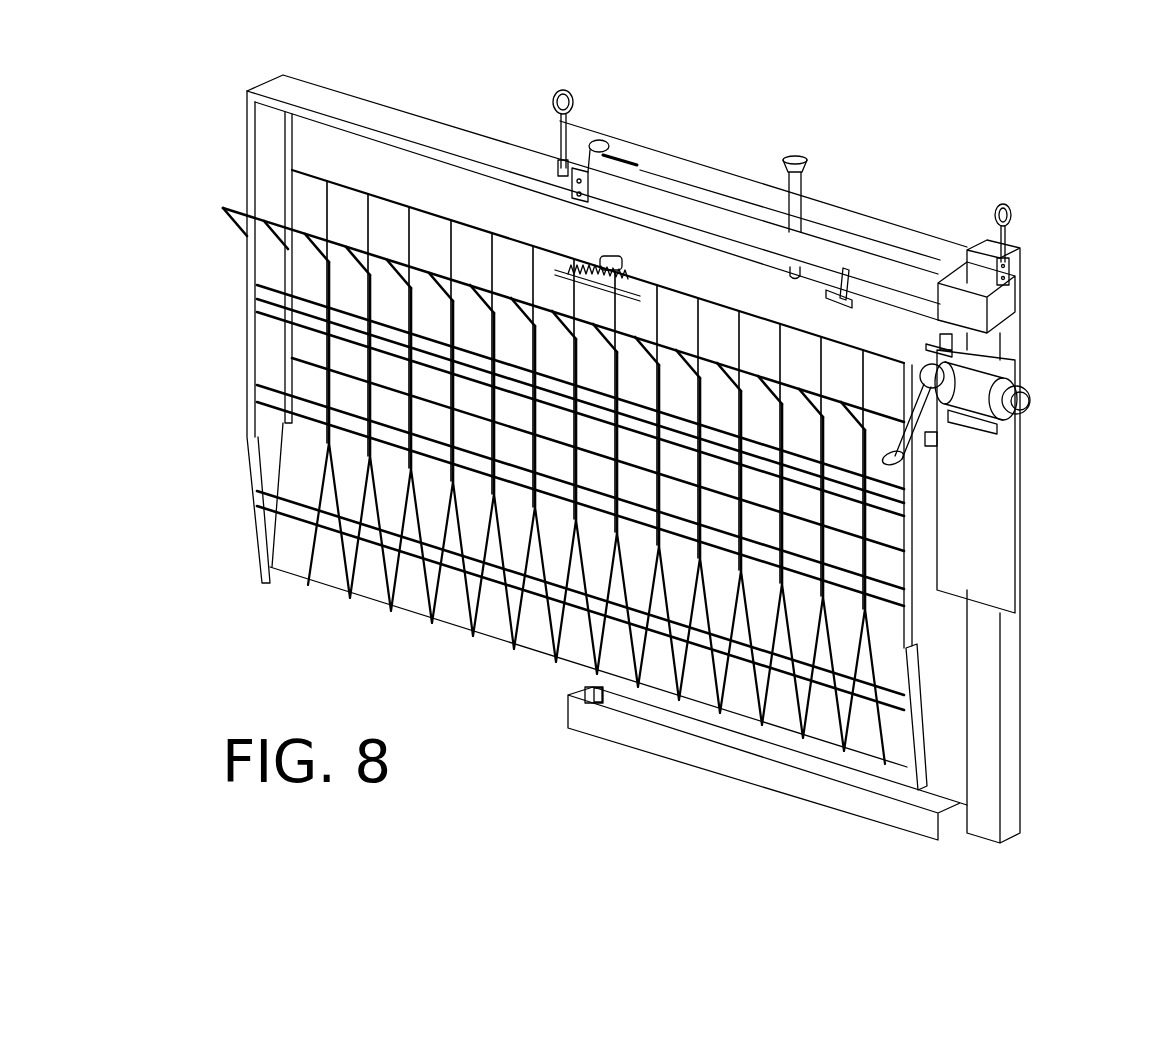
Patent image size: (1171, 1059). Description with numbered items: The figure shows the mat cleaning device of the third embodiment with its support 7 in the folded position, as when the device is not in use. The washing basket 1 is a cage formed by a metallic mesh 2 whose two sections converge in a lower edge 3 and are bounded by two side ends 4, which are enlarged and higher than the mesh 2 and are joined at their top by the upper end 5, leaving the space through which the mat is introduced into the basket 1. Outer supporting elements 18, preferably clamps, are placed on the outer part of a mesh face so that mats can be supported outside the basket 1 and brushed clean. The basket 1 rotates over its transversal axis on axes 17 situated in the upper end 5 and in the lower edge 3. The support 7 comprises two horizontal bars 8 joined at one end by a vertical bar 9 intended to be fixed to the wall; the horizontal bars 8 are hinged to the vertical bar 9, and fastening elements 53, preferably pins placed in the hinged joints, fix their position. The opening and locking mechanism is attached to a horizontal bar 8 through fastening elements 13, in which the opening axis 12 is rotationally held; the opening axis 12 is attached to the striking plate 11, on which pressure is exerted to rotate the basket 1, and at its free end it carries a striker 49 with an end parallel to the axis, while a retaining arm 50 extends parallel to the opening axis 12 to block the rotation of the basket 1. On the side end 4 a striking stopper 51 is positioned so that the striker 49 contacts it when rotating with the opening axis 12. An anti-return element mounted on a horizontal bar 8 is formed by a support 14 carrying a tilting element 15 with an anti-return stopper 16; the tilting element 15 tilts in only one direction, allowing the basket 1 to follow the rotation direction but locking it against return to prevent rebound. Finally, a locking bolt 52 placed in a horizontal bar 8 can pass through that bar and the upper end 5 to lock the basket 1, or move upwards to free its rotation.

The basket 1 is at (328, 498).
The metallic mesh 2 is at (330, 323).
The lower edge 3 is at (400, 615).
The side ends 4 is at (268, 160).
The upper end 5 is at (420, 137).
The support 7 is at (1036, 735).
The horizontal bars 8 is at (817, 233).
The vertical bar 9 is at (1008, 670).
The striking plate 11 is at (980, 545).
The opening axis 12 is at (1022, 403).
The fastening elements 13 is at (987, 360).
The support 14 is at (985, 262).
The tilting element 15 is at (826, 296).
The anti-return stopper 16 is at (850, 270).
The axis 17 is at (603, 148).
The outer supporting elements 18 is at (605, 262).
The striker 49 is at (900, 462).
The retaining arm 50 is at (940, 352).
The striking stopper 51 is at (950, 340).
The locking bolt 52 is at (805, 166).
The fastening elements 53 is at (574, 104).